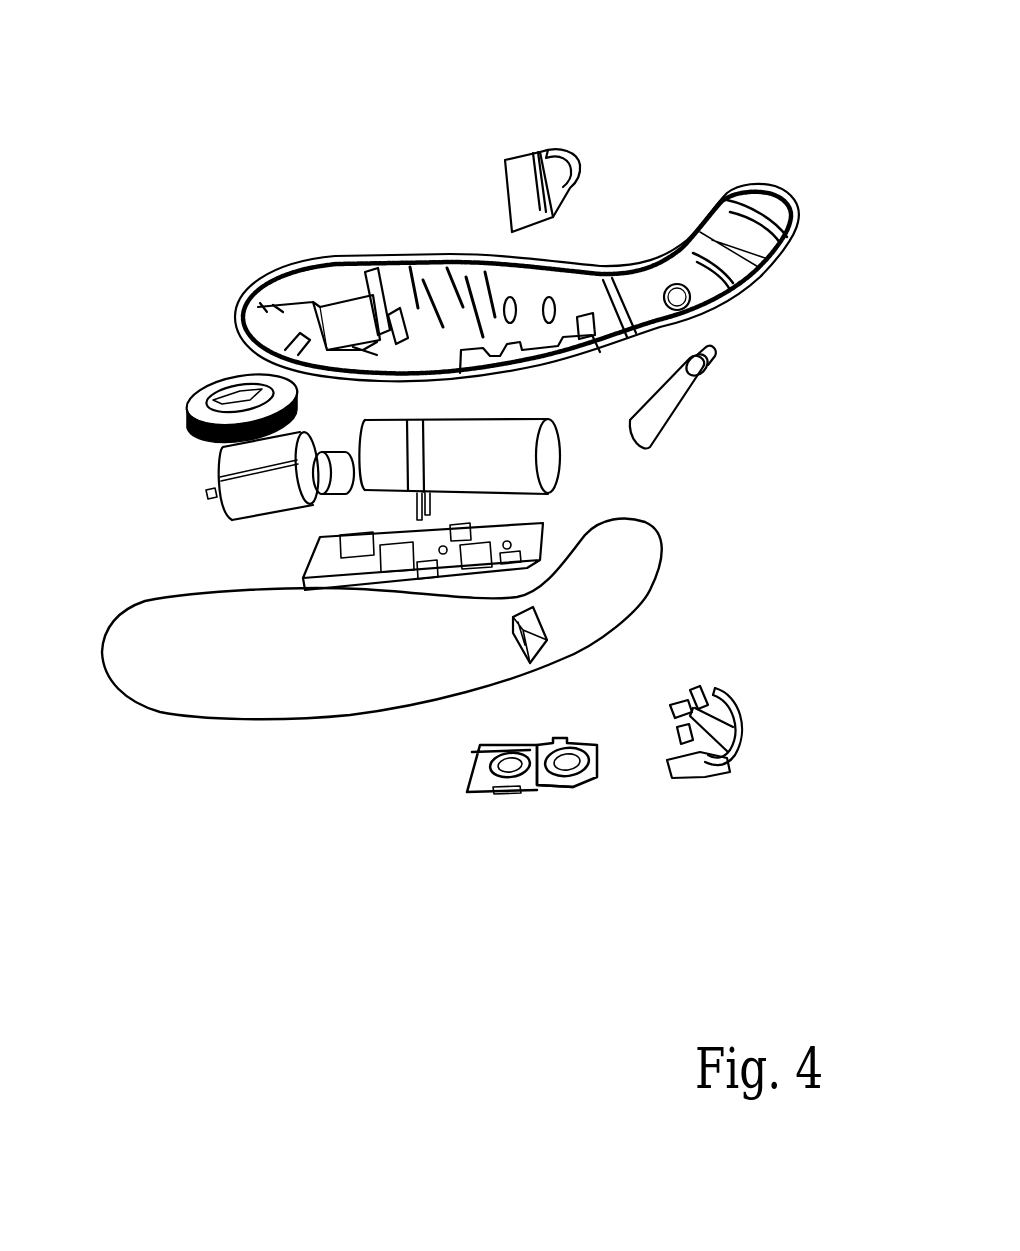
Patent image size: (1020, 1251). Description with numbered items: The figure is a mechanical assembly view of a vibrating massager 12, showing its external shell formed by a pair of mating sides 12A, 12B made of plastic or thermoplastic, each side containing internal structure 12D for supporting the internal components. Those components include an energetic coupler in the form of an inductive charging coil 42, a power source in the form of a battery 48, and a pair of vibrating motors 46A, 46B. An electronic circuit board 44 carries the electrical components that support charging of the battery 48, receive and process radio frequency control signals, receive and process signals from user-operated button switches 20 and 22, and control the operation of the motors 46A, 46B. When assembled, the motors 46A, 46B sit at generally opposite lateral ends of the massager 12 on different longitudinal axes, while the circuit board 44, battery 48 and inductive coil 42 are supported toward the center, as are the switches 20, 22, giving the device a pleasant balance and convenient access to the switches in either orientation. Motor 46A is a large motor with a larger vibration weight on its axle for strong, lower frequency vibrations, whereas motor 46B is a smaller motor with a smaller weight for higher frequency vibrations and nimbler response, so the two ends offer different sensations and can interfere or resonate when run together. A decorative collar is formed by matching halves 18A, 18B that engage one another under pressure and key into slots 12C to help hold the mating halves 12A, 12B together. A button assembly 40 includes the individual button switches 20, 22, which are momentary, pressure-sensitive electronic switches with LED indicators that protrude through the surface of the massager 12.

The vibrating massager 12 is at (707, 83).
The mating side 12A is at (758, 180).
The mating side 12B is at (643, 530).
The slot 12C is at (547, 655).
The internal structure 12D is at (390, 283).
The collar half 18A is at (547, 146).
The collar half 18B is at (741, 754).
The button switch 20 is at (583, 780).
The button switch 22 is at (510, 795).
The button assembly 40 is at (471, 873).
The inductive charging coil 42 is at (193, 410).
The electronic circuit board 44 is at (528, 535).
The vibrating motor 46A is at (220, 468).
The vibrating motor 46B is at (703, 373).
The battery 48 is at (547, 420).